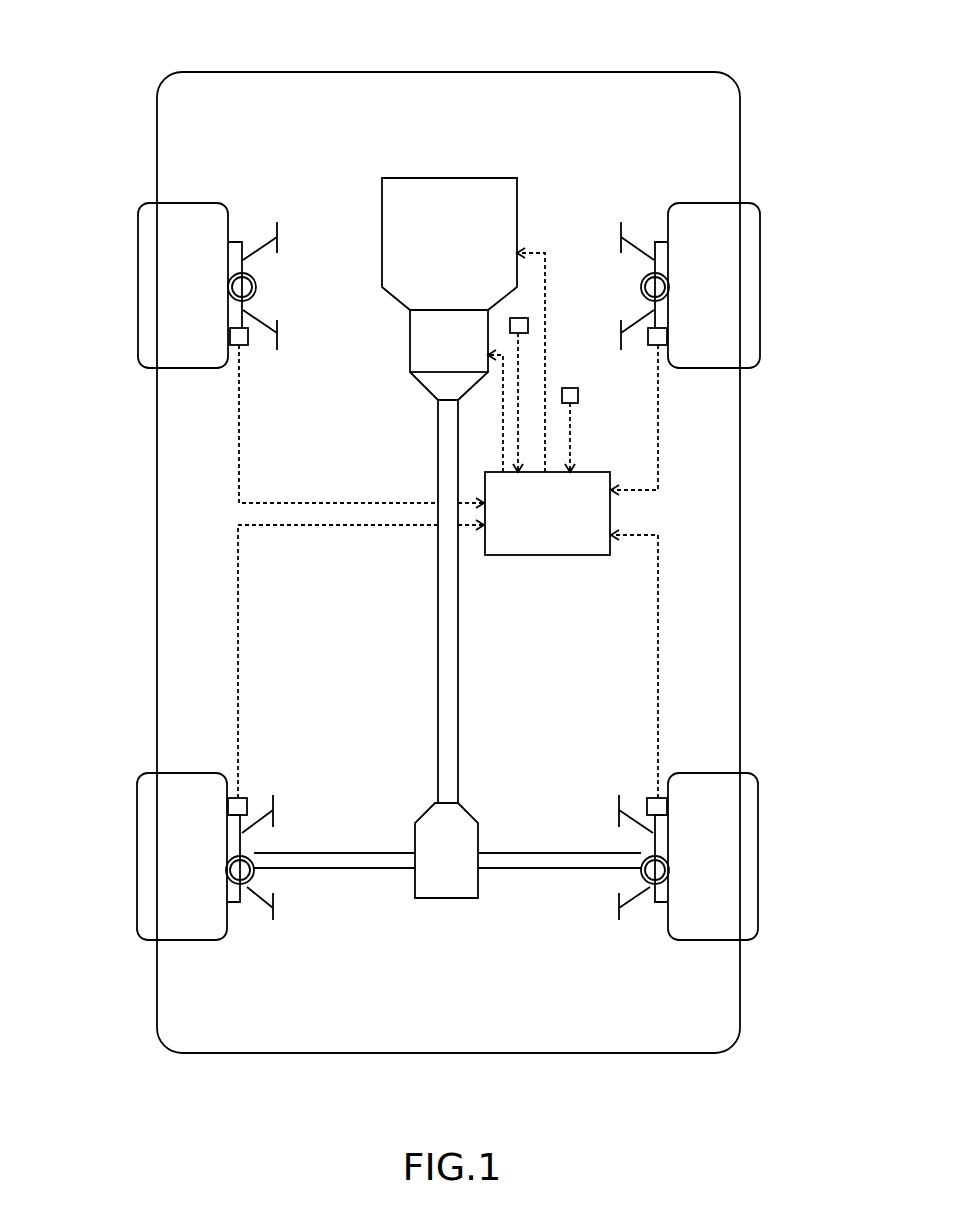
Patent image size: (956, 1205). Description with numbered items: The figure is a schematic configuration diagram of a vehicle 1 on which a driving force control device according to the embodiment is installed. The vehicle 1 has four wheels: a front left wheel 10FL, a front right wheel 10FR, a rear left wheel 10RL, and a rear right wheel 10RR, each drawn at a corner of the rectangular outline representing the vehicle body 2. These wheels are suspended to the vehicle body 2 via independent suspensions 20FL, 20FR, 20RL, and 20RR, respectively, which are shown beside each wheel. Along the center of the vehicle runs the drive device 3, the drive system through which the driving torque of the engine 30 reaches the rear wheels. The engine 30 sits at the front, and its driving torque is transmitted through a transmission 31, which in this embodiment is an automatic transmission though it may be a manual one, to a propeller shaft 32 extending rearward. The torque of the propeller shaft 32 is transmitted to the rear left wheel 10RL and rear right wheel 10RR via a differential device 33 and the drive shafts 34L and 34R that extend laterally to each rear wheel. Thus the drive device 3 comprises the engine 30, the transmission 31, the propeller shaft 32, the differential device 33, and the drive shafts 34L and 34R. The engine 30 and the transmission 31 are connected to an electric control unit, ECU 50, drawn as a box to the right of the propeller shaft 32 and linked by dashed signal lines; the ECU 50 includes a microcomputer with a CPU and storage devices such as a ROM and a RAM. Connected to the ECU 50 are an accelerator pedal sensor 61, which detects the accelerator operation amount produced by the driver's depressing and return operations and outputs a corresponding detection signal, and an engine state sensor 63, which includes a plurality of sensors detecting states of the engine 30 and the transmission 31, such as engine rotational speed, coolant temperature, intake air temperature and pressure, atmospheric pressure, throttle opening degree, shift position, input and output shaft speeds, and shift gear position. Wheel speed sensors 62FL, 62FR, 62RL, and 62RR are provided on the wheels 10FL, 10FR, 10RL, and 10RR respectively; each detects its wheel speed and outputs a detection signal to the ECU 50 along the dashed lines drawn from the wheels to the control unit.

The vehicle 1 is at (727, 56).
The vehicle body 2 is at (742, 520).
The drive device 3 is at (366, 156).
The front left wheel 10FL is at (138, 285).
The front right wheel 10FR is at (760, 285).
The rear left wheel 10RL is at (137, 840).
The rear right wheel 10RR is at (758, 835).
The independent suspension 20FL is at (259, 240).
The independent suspension 20FR is at (641, 235).
The independent suspension 20RL is at (253, 911).
The independent suspension 20RR is at (640, 911).
The engine 30 is at (517, 182).
The transmission 31 is at (410, 342).
The propeller shaft 32 is at (459, 746).
The differential device 33 is at (447, 898).
The drive shaft 34L is at (350, 868).
The drive shaft 34R is at (543, 868).
The electric control unit (ECU) 50 is at (594, 472).
The accelerator pedal sensor 61 is at (570, 388).
The wheel speed sensor 62FL is at (246, 346).
The wheel speed sensor 62FR is at (653, 346).
The wheel speed sensor 62RL is at (245, 798).
The wheel speed sensor 62RR is at (651, 798).
The engine state sensor 63 is at (519, 318).